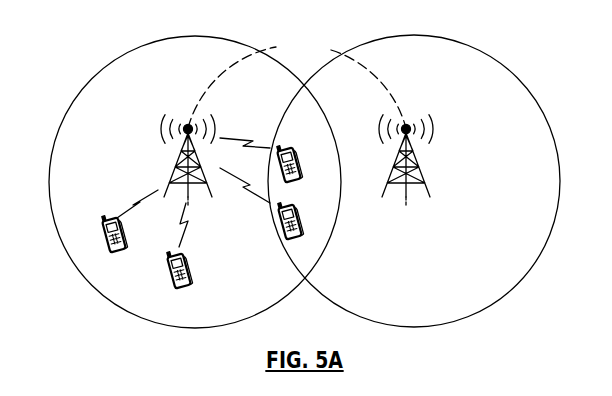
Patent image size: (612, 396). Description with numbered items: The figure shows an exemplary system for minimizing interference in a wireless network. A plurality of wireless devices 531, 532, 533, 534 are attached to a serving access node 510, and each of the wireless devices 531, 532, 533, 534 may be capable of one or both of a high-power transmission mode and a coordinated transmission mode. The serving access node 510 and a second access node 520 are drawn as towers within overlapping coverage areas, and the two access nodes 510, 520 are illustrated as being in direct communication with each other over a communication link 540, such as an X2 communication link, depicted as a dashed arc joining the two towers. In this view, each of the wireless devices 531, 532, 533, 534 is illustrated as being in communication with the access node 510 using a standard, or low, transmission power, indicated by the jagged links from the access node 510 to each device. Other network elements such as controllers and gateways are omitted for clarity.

The serving access node 510 is at (178, 188).
The access node 520 is at (422, 182).
The wireless device 531 is at (115, 252).
The wireless device 532 is at (174, 290).
The wireless device 533 is at (284, 242).
The wireless device 534 is at (291, 139).
The communication link 540 is at (283, 26).